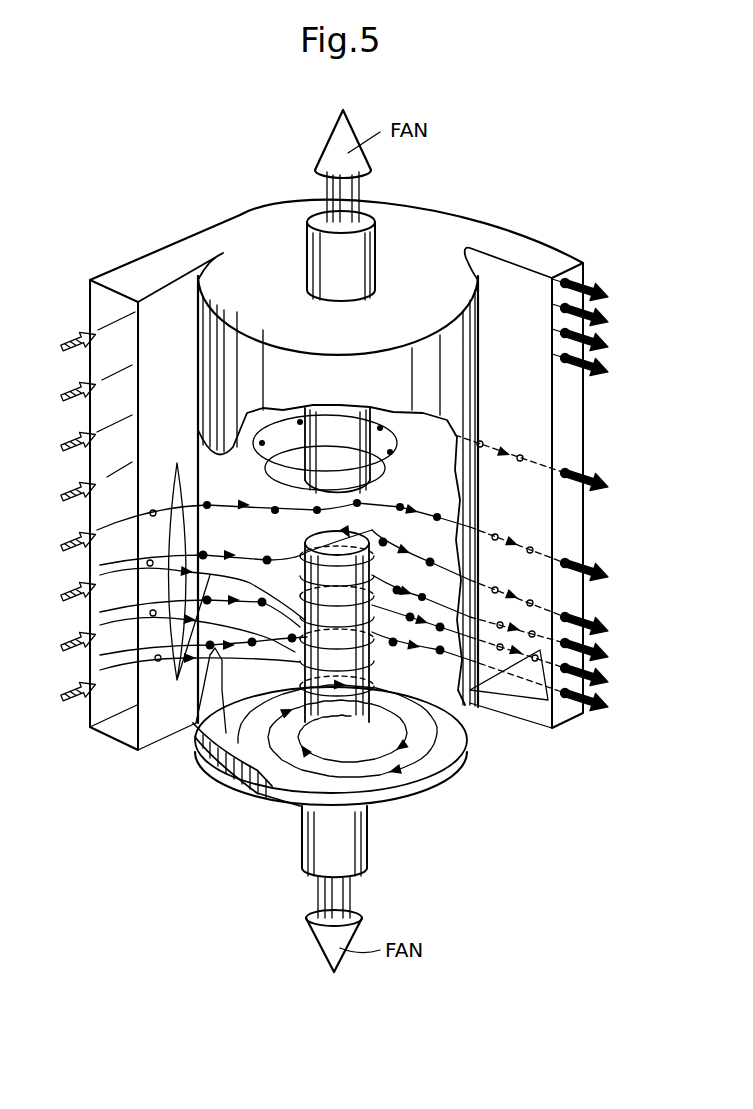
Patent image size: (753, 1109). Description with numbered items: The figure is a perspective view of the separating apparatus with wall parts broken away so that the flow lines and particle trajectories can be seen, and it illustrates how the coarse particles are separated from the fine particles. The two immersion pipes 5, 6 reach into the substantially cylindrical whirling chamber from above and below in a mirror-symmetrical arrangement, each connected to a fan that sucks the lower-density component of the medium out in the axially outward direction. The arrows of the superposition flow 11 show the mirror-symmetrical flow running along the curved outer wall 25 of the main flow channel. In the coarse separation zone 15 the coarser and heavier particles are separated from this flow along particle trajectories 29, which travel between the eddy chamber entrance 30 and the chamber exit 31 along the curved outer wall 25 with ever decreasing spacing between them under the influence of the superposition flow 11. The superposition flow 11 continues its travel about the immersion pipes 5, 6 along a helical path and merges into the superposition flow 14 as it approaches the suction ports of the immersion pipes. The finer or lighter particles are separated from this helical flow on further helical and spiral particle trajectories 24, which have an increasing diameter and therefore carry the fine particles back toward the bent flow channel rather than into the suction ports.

The immersion pipe 5 is at (373, 250).
The immersion pipe 6 is at (372, 838).
The superposition flow 11 is at (120, 545).
The superposition flow 14 is at (345, 530).
The coarse separation zone 15 is at (240, 523).
The particle trajectories 24 is at (415, 507).
The outer wall 25 is at (90, 297).
The particle trajectories 29 is at (222, 528).
The eddy chamber entrance 30 is at (107, 452).
The chamber exit 31 is at (568, 417).